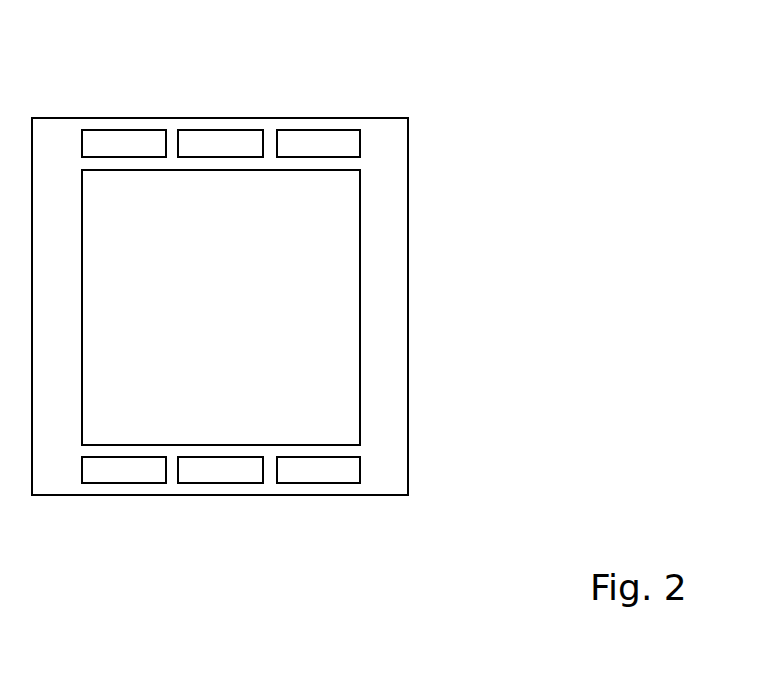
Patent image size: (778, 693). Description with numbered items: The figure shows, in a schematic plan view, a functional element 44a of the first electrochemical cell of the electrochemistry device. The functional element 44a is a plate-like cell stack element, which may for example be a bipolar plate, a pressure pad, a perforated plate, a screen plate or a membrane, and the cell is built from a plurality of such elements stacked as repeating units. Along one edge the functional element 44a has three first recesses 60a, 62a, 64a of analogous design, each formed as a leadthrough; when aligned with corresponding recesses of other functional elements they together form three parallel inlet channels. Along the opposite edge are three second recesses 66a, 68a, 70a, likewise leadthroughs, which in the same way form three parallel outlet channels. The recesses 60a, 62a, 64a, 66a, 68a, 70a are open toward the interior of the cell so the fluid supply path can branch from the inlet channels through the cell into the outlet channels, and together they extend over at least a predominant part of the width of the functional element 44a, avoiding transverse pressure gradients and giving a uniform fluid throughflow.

The functional element 44a is at (392, 290).
The first recess 60a is at (317, 143).
The first recess 62a is at (220, 143).
The first recess 64a is at (122, 143).
The second recess 66a is at (320, 470).
The second recess 68a is at (220, 470).
The second recess 70a is at (123, 470).